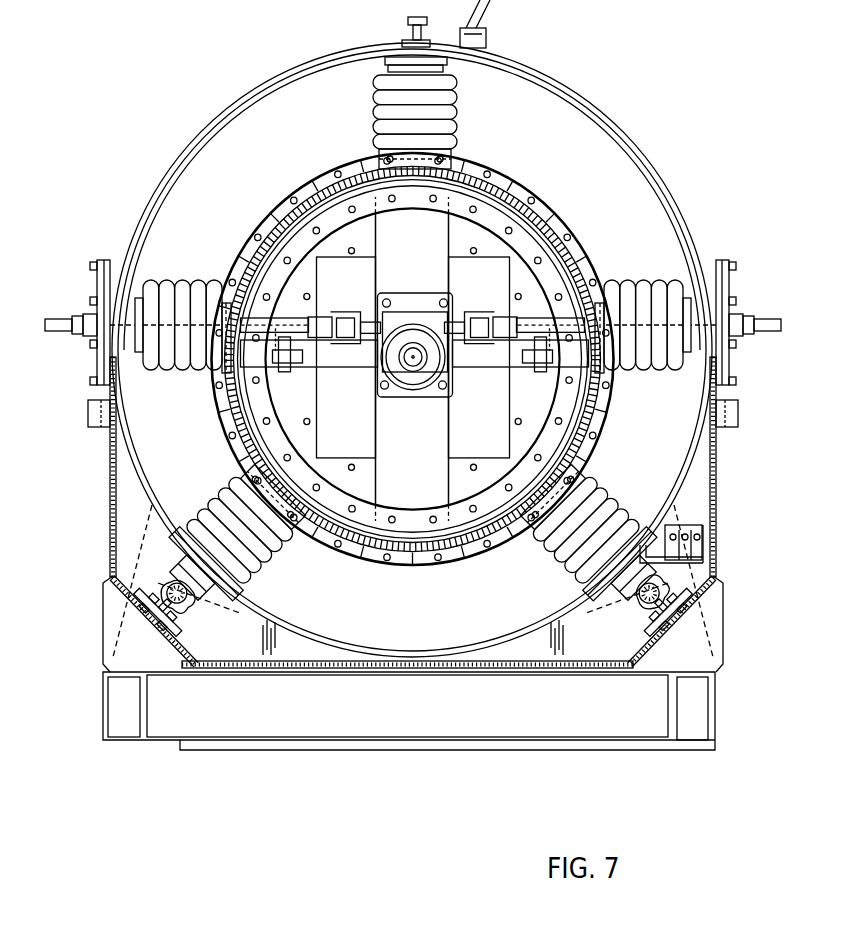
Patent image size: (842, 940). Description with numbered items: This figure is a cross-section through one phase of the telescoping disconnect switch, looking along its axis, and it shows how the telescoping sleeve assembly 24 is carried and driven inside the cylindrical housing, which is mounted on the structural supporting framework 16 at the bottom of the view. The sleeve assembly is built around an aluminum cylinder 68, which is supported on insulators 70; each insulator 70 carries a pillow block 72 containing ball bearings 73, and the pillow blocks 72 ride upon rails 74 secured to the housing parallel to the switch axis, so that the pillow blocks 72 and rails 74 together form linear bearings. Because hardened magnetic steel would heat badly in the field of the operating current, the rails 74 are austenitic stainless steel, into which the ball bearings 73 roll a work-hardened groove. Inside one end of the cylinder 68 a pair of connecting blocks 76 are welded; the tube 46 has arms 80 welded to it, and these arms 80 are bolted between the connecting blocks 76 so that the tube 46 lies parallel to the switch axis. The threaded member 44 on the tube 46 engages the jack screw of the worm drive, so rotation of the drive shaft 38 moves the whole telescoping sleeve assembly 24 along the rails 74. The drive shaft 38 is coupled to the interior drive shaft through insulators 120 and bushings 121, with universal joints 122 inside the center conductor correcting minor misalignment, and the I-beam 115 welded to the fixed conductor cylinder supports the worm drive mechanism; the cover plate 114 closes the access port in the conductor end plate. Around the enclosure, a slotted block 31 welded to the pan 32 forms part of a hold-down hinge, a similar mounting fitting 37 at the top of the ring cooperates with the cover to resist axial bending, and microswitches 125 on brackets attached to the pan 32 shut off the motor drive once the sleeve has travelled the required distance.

The structural supporting framework 16 is at (140, 750).
The telescoping sleeve assembly 24 is at (577, 183).
The slotted block 31 is at (103, 427).
The pan 32 is at (710, 508).
The mounting fitting 37 is at (487, 44).
The drive shaft 38 is at (54, 331).
The threaded member 44 is at (411, 372).
The tube 46 is at (447, 368).
The aluminum cylinder 68 is at (417, 565).
The insulator 70 is at (372, 106).
The pillow block 72 is at (214, 612).
The ball bearing 73 is at (172, 570).
The rail 74 is at (142, 620).
The connecting block 76 is at (268, 373).
The arm 80 is at (338, 366).
The cover plate 114 is at (462, 265).
The I-beam 115 is at (388, 242).
The insulator 120 is at (209, 286).
The bushing 121 is at (86, 318).
The universal joint 122 is at (355, 313).
The microswitch 125 is at (693, 524).